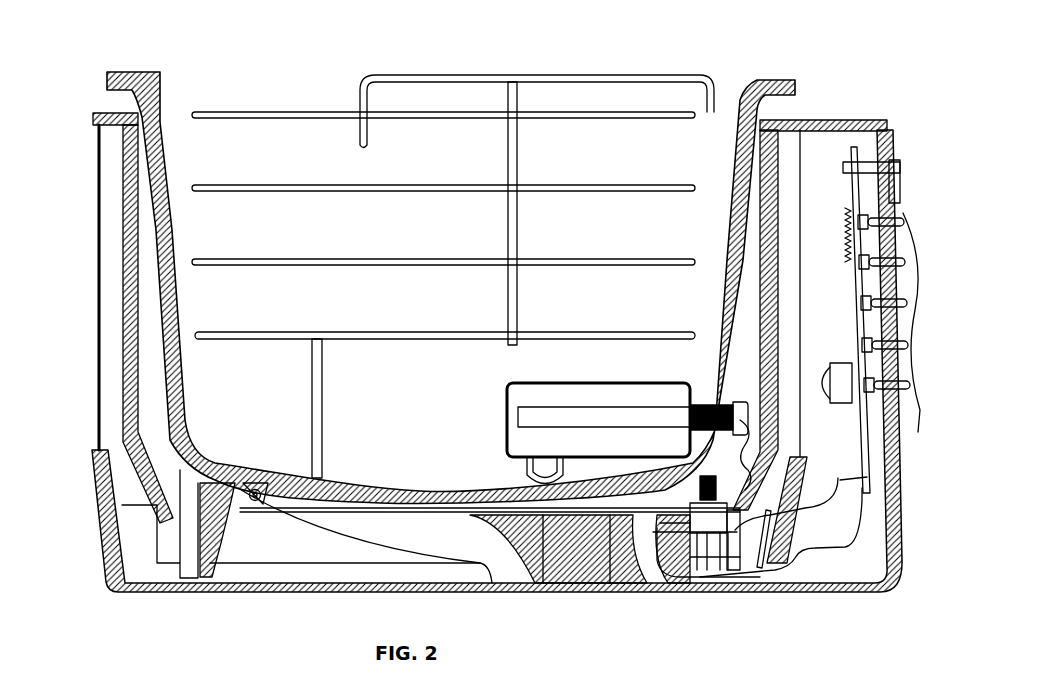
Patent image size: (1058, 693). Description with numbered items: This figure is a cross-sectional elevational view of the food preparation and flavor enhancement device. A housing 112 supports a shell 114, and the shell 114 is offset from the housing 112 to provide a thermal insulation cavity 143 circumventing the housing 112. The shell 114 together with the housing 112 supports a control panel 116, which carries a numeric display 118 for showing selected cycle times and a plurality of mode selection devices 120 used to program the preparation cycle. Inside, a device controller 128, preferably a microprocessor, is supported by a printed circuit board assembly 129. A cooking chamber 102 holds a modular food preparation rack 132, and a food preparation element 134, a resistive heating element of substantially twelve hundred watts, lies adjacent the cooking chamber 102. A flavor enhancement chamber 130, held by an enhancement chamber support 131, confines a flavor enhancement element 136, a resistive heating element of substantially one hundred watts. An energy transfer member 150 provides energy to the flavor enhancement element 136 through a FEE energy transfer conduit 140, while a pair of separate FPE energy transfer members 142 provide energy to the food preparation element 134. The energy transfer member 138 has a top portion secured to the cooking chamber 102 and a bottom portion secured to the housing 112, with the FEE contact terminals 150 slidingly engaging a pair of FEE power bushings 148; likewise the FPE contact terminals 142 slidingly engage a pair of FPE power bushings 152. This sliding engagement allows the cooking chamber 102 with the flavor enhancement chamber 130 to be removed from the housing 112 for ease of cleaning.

The cooking chamber 102 is at (122, 74).
The housing 112 is at (103, 113).
The shell 114 is at (99, 228).
The control panel 116 is at (893, 474).
The numeric display 118 is at (898, 188).
The mode selection devices 120 is at (929, 322).
The device controller 128 is at (845, 238).
The printed circuit board assembly 129 is at (852, 328).
The flavor enhancement chamber 130 is at (535, 376).
The enhancement chamber support 131 is at (518, 473).
The modular food preparation rack 132 is at (512, 82).
The food preparation element 134 is at (256, 503).
The flavor enhancement element 136 is at (568, 414).
The energy transfer member 138 is at (738, 572).
The FEE energy transfer conduit 140 is at (779, 454).
The FPE energy transfer members 142 is at (790, 529).
The thermal insulation cavity 143 is at (100, 358).
The FEE power bushings 148 is at (640, 575).
The energy transfer member 150 is at (710, 540).
The FPE power bushings 152 is at (808, 548).